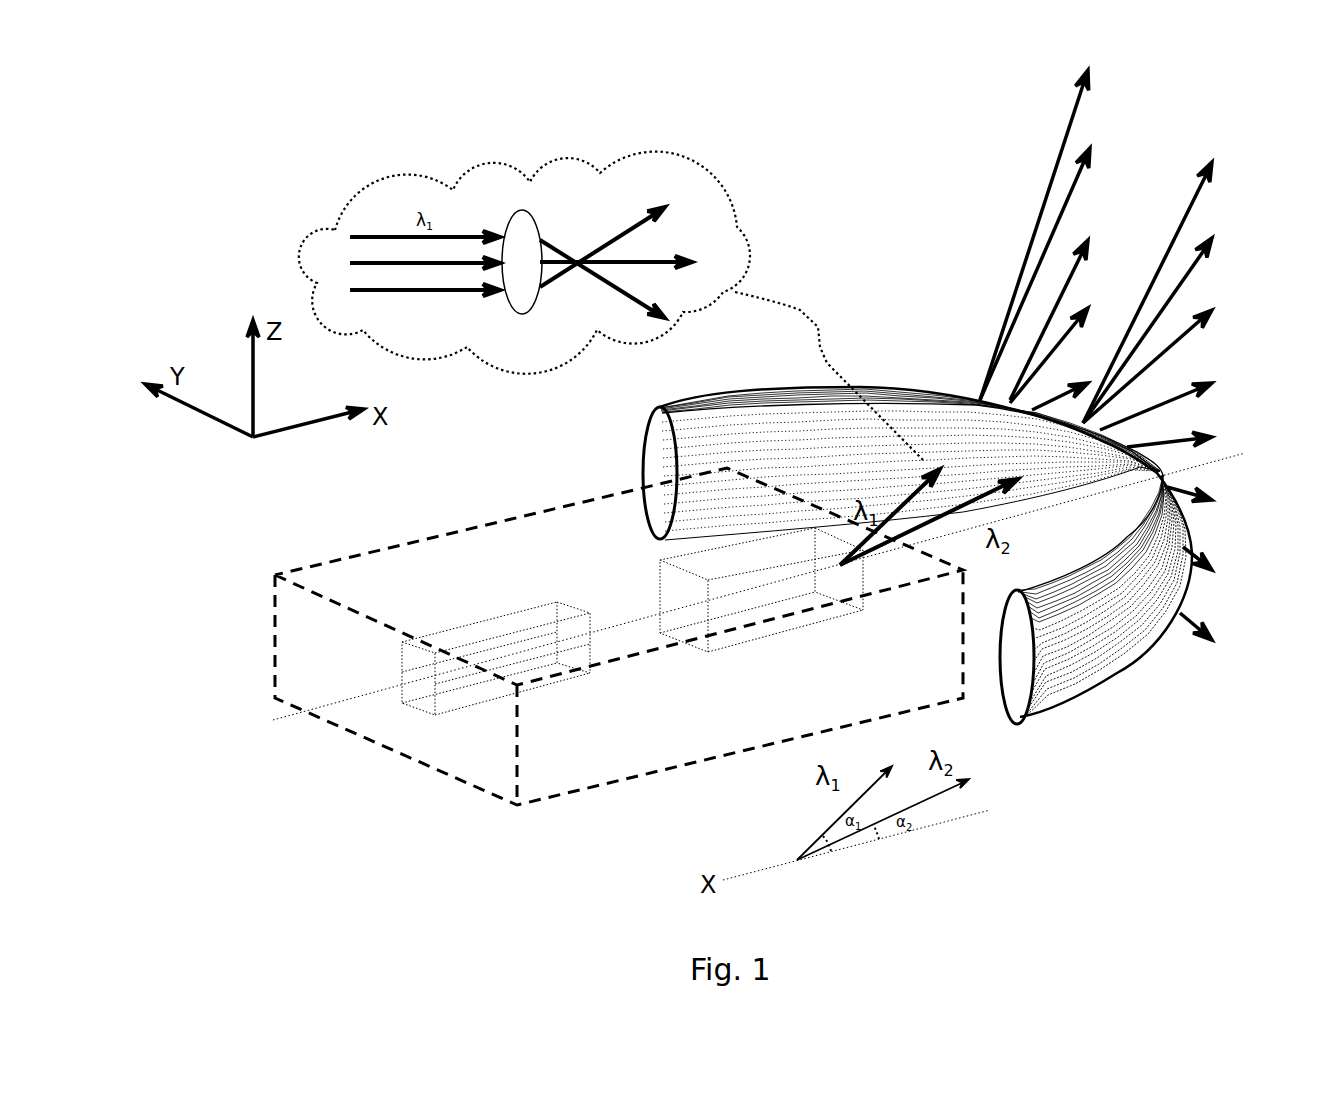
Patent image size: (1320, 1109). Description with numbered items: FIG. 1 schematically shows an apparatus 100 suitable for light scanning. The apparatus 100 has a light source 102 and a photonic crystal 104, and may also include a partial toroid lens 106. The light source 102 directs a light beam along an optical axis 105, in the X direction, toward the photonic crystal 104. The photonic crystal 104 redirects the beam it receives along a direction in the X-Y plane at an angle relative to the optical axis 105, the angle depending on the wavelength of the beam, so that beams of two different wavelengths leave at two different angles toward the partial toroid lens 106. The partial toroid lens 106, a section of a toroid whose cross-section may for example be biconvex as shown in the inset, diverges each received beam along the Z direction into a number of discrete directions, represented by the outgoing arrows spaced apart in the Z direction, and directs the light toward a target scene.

The apparatus 100 is at (290, 551).
The light source 102 is at (521, 603).
The photonic crystal 104 is at (688, 650).
The optical axis 105 is at (641, 617).
The partial toroid lens 106 is at (903, 381).